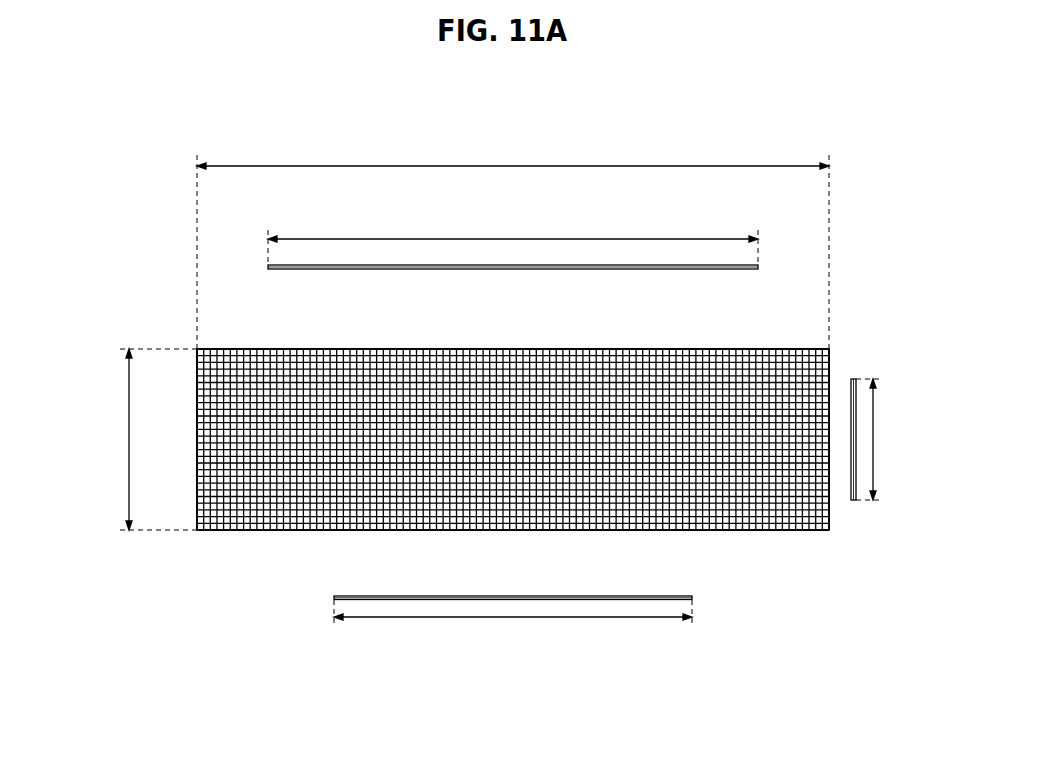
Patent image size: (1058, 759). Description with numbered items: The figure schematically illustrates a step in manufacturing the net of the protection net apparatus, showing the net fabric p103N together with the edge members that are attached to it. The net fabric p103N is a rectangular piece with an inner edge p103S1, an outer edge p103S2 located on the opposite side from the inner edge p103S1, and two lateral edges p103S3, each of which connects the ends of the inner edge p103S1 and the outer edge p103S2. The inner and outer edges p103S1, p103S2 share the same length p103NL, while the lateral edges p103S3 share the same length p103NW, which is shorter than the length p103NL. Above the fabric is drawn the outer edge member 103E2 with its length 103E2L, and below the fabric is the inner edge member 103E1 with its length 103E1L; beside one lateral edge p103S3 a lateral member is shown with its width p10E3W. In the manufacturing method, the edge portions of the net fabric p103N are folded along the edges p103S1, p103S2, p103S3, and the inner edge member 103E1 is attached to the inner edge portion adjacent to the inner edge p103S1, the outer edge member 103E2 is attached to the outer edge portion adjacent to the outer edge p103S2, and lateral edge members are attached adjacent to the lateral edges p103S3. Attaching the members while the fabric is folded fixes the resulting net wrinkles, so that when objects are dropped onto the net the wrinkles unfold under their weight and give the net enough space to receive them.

The net fabric p103N is at (833, 347).
The length of the inner and outer edges p103NL is at (513, 245).
The length of the lateral edges p103NW is at (132, 439).
The inner edge p103S1 is at (742, 531).
The outer edge p103S2 is at (527, 349).
The lateral edges p103S3 is at (197, 418).
The inner edge member 103E1 is at (650, 595).
The length of first electrode 103E1L is at (513, 620).
The outer edge member 103E2 is at (670, 270).
The length of second electrode 103E2L is at (513, 239).
The width of third electrode p10E3W is at (890, 439).